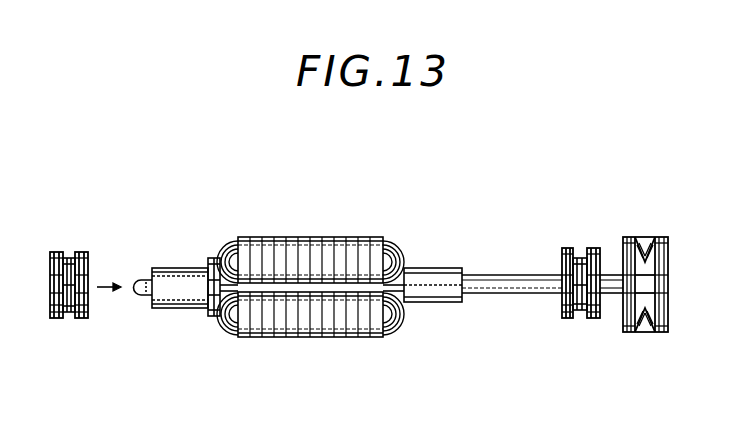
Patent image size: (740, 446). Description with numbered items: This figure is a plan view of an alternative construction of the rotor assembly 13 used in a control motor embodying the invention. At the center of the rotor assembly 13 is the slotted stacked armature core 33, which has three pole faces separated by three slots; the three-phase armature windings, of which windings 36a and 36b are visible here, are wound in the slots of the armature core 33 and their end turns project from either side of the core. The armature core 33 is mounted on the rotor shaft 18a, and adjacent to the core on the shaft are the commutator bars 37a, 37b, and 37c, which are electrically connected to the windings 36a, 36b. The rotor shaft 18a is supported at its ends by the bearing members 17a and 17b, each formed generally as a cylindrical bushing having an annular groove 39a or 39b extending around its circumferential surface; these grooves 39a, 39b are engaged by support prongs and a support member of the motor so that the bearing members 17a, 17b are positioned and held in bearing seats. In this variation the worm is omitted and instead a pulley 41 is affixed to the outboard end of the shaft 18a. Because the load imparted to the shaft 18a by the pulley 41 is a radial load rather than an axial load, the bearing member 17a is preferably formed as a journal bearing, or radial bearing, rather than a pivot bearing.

The rotor assembly 13 is at (420, 269).
The bearing member 17a is at (569, 318).
The bearing member 17b is at (60, 262).
The rotor shaft 18a is at (505, 294).
The armature core 33 is at (290, 238).
The armature winding 36a is at (398, 242).
The armature winding 36b is at (397, 325).
The commutator bar 37a is at (167, 310).
The commutator bar 37b is at (167, 287).
The commutator bar 37c is at (190, 267).
The annular groove 39a is at (581, 258).
The annular groove 39b is at (70, 312).
The pulley 41 is at (640, 333).